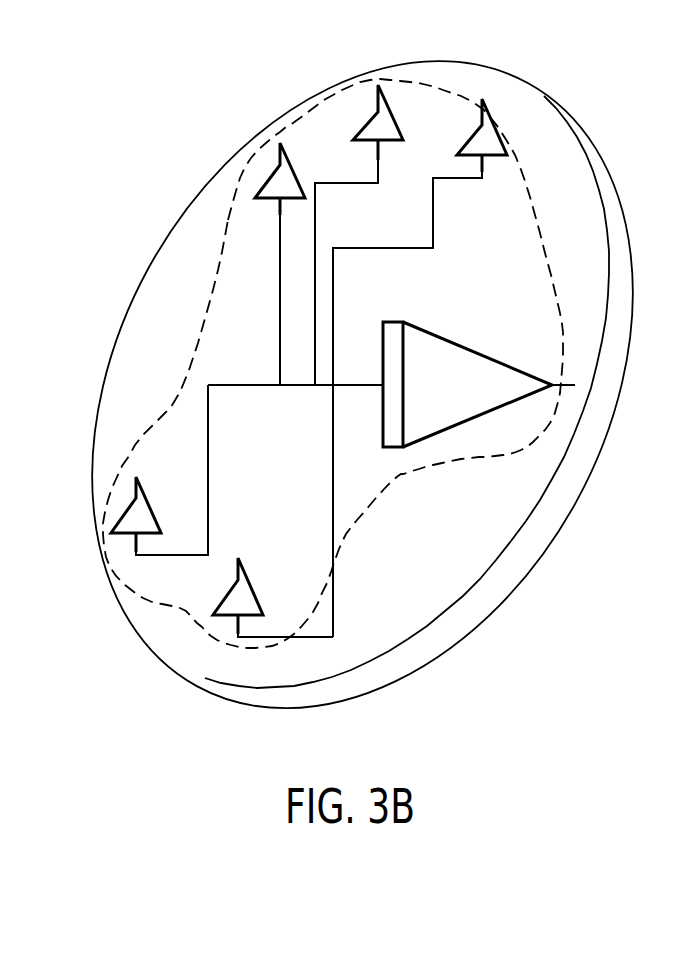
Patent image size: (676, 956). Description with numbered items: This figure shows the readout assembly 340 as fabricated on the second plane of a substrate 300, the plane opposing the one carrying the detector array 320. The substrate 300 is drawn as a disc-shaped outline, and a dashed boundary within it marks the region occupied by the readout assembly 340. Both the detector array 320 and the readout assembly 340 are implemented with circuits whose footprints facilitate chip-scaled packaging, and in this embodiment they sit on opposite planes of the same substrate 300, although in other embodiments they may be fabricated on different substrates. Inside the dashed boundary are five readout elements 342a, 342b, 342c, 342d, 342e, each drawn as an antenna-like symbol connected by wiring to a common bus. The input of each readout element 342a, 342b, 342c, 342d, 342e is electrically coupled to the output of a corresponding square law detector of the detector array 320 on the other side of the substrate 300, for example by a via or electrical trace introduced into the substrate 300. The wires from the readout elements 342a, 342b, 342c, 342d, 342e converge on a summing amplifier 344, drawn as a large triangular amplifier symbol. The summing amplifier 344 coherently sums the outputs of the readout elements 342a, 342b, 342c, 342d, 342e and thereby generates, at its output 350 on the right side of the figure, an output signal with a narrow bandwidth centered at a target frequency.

The substrate 300 is at (288, 98).
The detector array 320 is at (515, 490).
The readout assembly 340 is at (397, 482).
The readout element 342a is at (245, 592).
The readout element 342b is at (143, 507).
The readout element 342c is at (268, 185).
The readout element 342d is at (365, 120).
The readout element 342e is at (500, 135).
The summing amplifier 344 is at (485, 363).
The output 350 is at (560, 386).